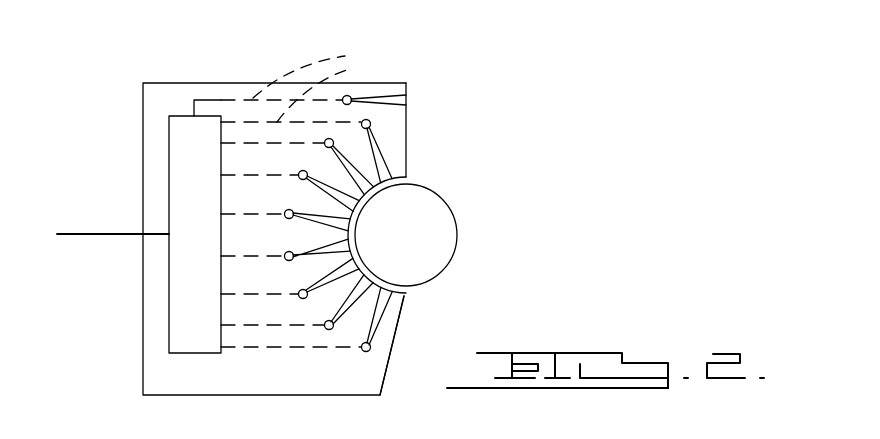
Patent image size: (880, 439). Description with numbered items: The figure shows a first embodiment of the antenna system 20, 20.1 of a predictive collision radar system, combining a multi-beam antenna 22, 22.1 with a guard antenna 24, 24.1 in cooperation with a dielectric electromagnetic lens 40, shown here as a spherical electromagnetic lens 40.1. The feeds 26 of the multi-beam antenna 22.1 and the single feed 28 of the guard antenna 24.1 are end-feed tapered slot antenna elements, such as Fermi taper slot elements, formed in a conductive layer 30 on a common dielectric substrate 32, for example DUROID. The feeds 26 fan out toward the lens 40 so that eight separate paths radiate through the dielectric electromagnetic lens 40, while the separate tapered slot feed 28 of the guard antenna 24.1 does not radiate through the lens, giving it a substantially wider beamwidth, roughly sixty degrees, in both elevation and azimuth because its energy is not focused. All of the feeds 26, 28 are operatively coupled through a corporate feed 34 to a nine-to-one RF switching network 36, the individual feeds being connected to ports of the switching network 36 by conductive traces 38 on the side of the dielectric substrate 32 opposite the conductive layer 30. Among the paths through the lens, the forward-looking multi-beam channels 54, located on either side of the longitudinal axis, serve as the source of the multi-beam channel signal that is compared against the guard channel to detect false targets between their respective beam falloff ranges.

The antenna system 20 is at (368, 206).
The first embodiment of the antenna system 20.1 is at (545, 101).
The multi-beam antenna 22 is at (439, 206).
The first embodiment of the multi-beam antenna 22.1 is at (480, 157).
The guard antenna 24 is at (374, 185).
The first embodiment of the guard antenna 24.1 is at (420, 101).
The feeds 26 is at (387, 154).
The feed 28 is at (379, 97).
The conductive layer 30 is at (247, 384).
The dielectric substrate 32 is at (407, 97).
The corporate feed 34 is at (100, 233).
The switching network 36 is at (207, 211).
The conductive traces 38 is at (310, 83).
The dielectric electromagnetic lens 40 is at (457, 235).
The spherical electromagnetic lens 40.1 is at (423, 259).
The forward-looking multi-beam channel 54 is at (310, 229).